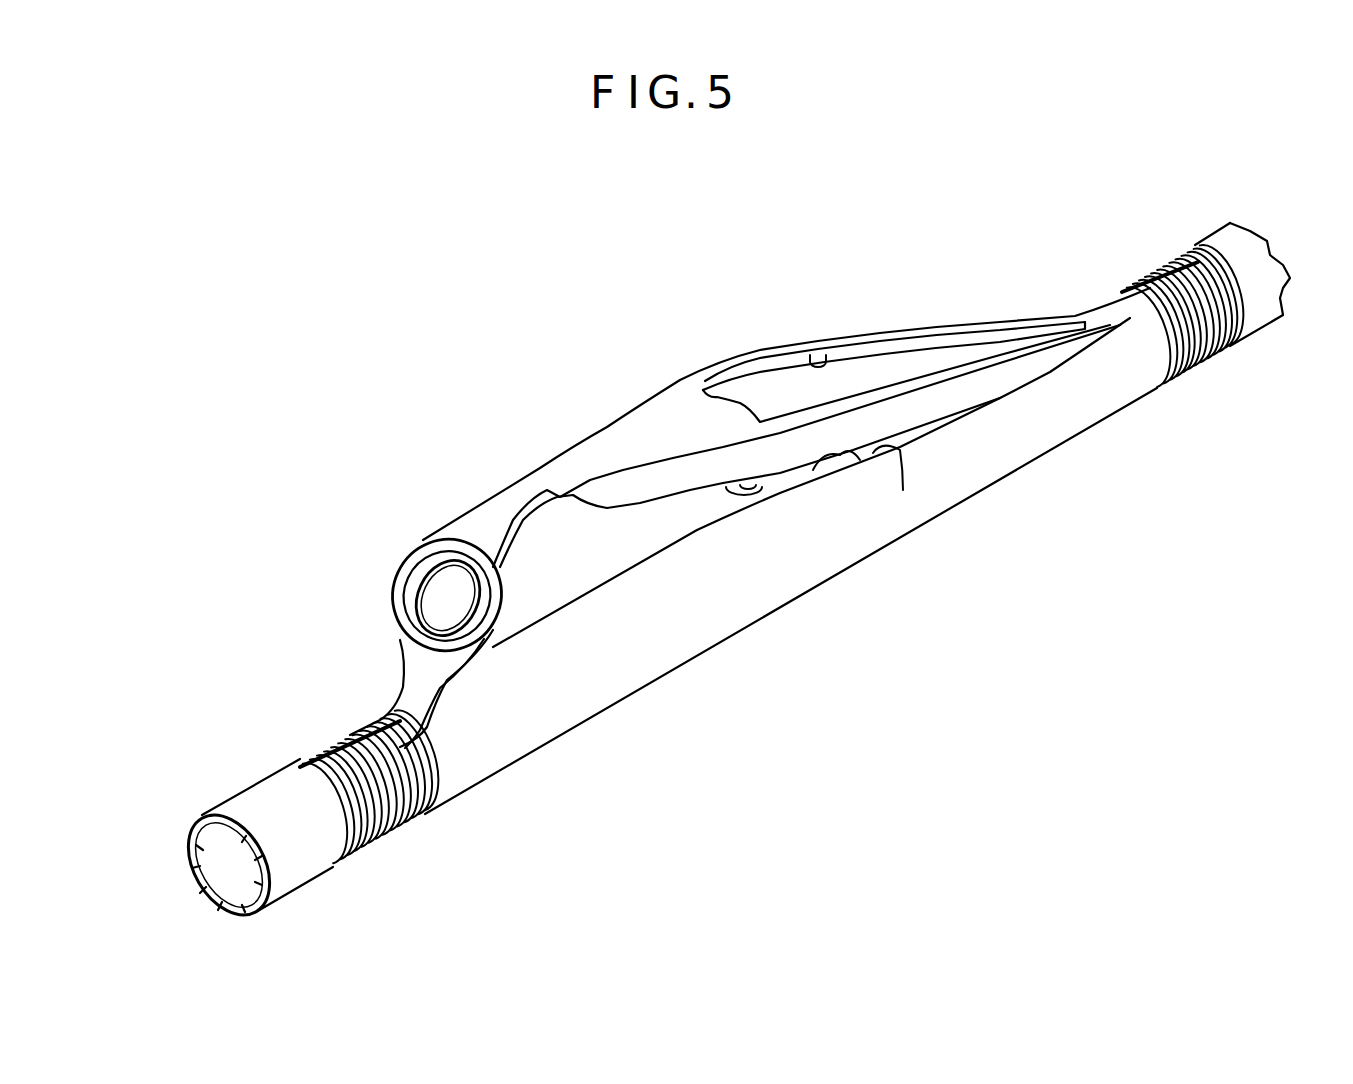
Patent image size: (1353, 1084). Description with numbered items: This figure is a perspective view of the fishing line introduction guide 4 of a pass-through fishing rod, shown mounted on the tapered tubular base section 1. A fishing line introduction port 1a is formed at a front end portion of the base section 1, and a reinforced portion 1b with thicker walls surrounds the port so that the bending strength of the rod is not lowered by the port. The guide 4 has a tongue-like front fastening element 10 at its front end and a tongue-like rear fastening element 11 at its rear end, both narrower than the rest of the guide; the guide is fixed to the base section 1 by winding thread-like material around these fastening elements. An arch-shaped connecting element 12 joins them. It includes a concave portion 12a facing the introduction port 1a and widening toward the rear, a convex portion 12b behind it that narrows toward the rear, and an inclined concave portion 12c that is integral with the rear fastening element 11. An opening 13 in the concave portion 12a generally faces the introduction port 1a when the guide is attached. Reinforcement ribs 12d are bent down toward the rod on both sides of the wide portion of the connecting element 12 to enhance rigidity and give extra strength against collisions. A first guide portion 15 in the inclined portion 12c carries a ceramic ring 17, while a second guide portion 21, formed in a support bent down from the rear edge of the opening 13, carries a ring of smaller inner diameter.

The base section 1 is at (675, 686).
The fishing line introduction port 1a is at (903, 455).
The reinforced portion 1b is at (520, 745).
The fishing line introduction guide 4 is at (726, 472).
The front fastening element 10 is at (1158, 262).
The rear fastening element 11 is at (350, 740).
The connecting element 12 is at (632, 433).
The concave portion 12a is at (915, 337).
The convex portion 12b is at (599, 450).
The inclined portion 12c is at (500, 603).
The reinforcement rib 12d is at (800, 450).
The opening 13 is at (821, 352).
The first guide portion 15 is at (392, 554).
The ring 17 is at (417, 584).
The second guide portion 21 is at (722, 494).